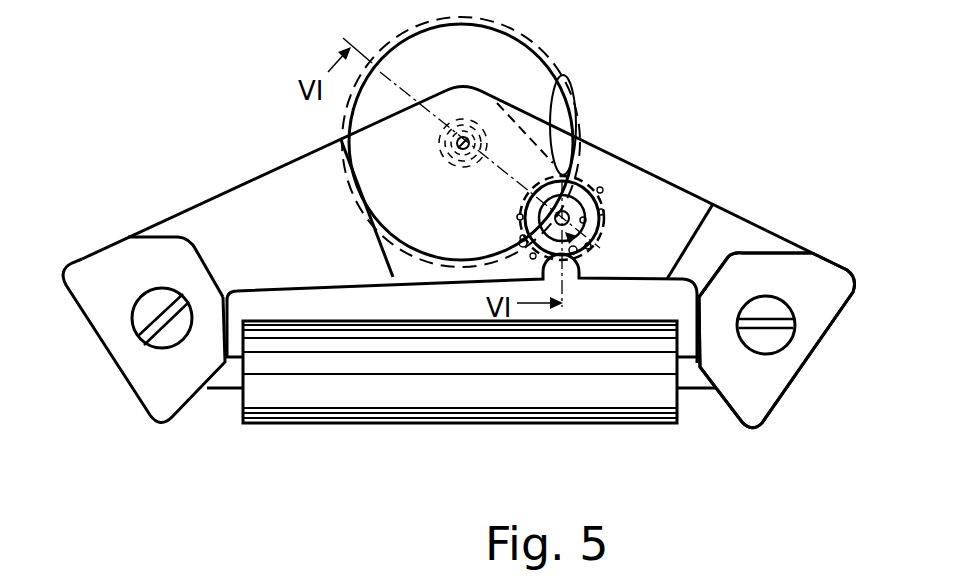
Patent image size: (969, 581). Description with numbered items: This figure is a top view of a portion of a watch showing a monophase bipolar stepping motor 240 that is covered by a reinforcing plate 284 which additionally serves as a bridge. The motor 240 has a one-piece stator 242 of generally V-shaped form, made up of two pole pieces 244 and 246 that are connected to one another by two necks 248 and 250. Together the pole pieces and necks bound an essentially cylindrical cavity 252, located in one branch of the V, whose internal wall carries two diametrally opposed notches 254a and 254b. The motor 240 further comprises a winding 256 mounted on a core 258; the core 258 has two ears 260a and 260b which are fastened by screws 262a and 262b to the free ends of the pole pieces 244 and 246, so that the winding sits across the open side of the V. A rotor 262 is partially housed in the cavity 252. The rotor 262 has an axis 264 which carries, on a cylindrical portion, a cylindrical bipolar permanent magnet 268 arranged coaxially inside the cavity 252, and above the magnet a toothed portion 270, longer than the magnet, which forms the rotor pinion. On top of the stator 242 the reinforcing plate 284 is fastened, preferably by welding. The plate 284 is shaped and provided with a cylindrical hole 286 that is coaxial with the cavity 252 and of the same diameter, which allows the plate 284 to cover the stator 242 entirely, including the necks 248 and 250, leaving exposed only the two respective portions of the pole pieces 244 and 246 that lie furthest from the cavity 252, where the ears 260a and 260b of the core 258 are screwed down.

The monophase bipolar stepping motor 240 is at (652, 155).
The stator 242 is at (310, 173).
The pole piece 244 is at (215, 227).
The pole piece 246 is at (727, 240).
The neck 248 is at (565, 72).
The neck 250 is at (562, 256).
The cylindrical cavity 252 is at (610, 200).
The notch 254a is at (597, 183).
The notch 254b is at (540, 237).
The winding 256 is at (390, 405).
The core 258 is at (687, 368).
The ear 260a is at (160, 390).
The ear 260b is at (765, 402).
The rotor 262 is at (520, 243).
The screw 262a is at (150, 303).
The screw 262b is at (770, 337).
The axis 264 is at (573, 250).
The cylindrical bipolar permanent magnet 268 is at (583, 220).
The toothed portion 270 is at (588, 246).
The reinforcing plate 284 is at (385, 250).
The cylindrical hole 286 is at (520, 217).